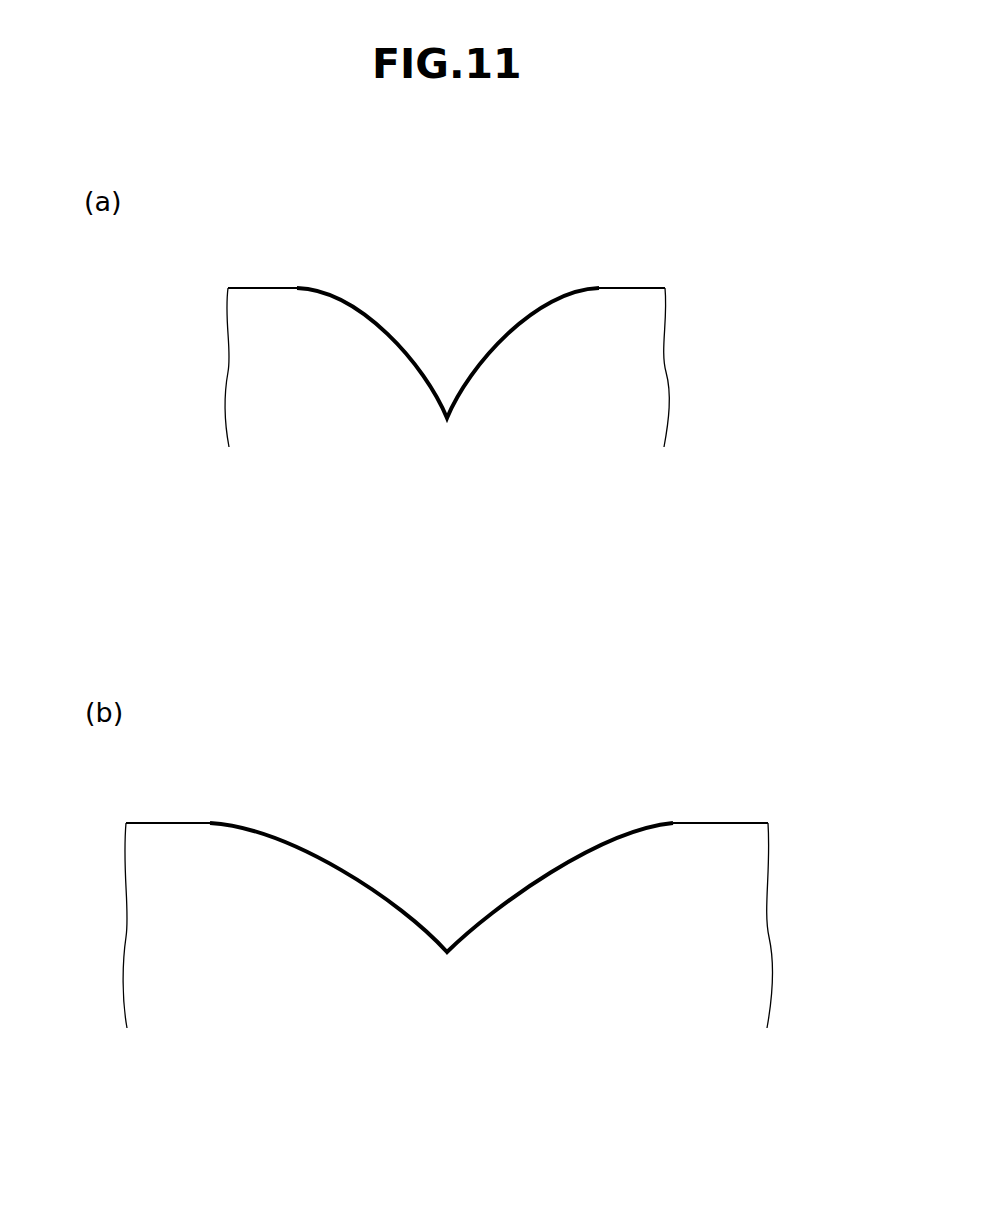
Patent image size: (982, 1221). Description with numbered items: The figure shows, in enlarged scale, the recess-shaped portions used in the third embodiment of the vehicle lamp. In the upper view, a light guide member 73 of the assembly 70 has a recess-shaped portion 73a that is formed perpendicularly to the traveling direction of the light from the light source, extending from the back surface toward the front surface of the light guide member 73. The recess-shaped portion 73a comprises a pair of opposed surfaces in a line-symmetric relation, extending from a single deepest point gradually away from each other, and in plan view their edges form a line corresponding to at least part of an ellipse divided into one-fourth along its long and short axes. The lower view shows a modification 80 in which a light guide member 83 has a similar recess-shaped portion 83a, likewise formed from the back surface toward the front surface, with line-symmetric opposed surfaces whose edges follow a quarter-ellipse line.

The forming roller (first example) 70 is at (411, 301).
The light guide member 73 is at (228, 367).
The recess-shaped portion 73a is at (430, 385).
The forming roller (second example) 80 is at (408, 869).
The light guide member 83 is at (124, 936).
The recess-shaped portion 83a is at (427, 923).